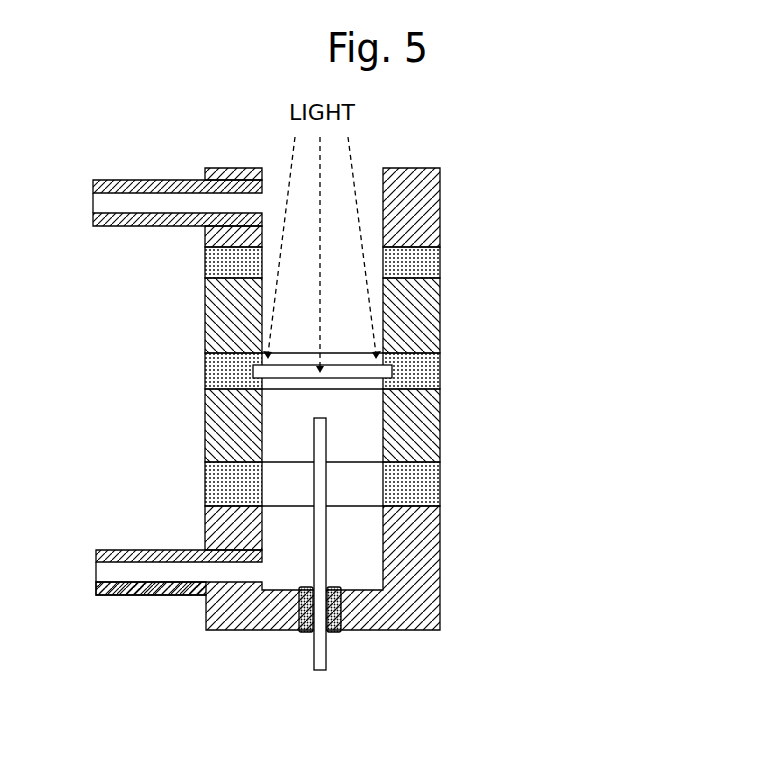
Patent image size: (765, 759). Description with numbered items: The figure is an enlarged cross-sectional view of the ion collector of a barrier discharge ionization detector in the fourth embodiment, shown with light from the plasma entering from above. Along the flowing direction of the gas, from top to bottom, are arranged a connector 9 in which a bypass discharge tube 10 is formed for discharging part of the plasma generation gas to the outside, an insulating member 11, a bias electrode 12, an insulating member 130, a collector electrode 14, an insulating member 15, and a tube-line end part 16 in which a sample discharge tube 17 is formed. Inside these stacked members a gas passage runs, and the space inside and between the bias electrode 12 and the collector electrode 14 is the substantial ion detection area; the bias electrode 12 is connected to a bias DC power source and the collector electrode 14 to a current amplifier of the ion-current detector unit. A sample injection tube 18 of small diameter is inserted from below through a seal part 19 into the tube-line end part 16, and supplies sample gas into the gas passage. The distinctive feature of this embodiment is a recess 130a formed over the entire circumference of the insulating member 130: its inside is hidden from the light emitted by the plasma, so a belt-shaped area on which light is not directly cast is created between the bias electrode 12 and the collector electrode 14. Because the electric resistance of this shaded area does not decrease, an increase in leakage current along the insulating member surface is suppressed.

The connector 9 is at (440, 182).
The bypass discharge tube 10 is at (133, 178).
The insulating member 11 is at (203, 265).
The bias electrode 12 is at (433, 302).
The insulating member 130 is at (207, 368).
The recess 130a is at (390, 370).
The collector electrode 14 is at (439, 420).
The insulating member 15 is at (207, 478).
The tube-line end part 16 is at (397, 632).
The sample discharge tube 17 is at (142, 597).
The sample injection tube 18 is at (329, 540).
The seal part 19 is at (299, 632).